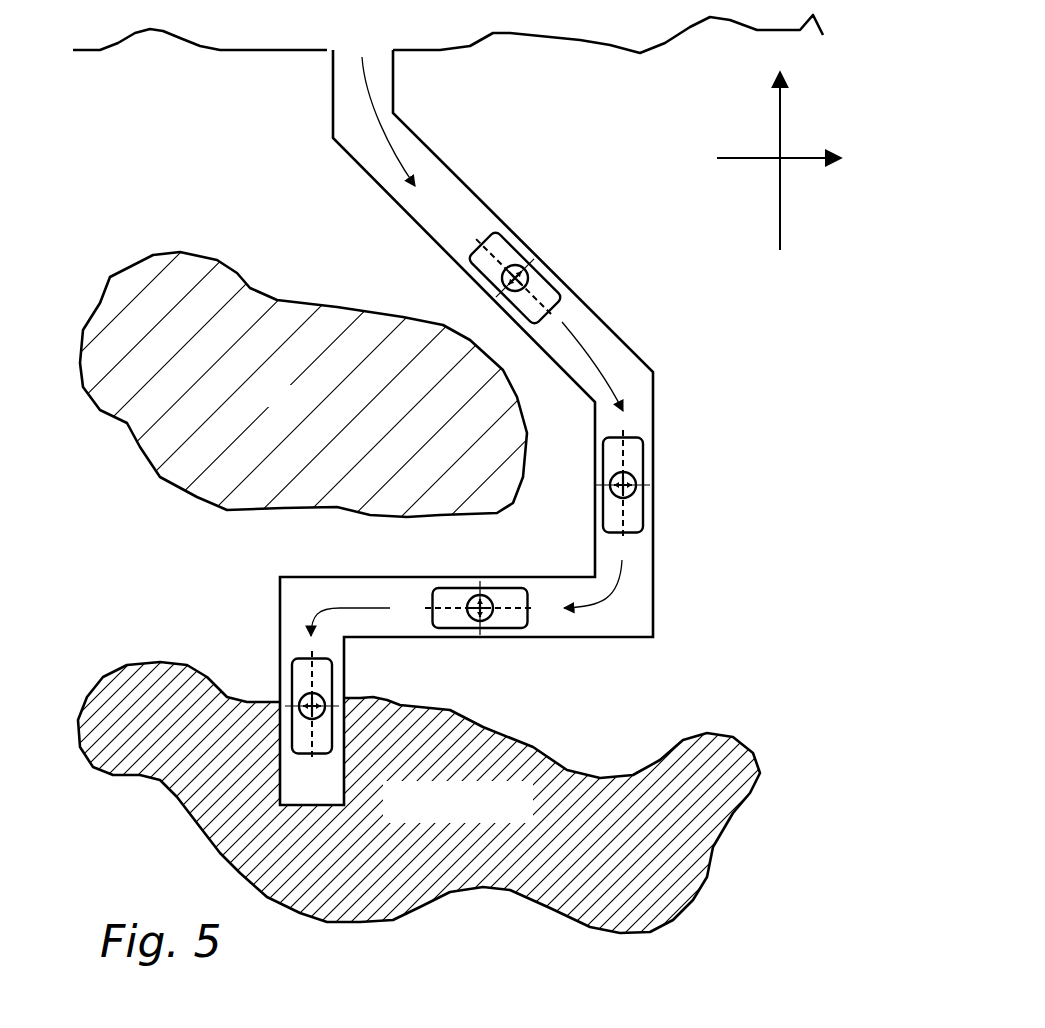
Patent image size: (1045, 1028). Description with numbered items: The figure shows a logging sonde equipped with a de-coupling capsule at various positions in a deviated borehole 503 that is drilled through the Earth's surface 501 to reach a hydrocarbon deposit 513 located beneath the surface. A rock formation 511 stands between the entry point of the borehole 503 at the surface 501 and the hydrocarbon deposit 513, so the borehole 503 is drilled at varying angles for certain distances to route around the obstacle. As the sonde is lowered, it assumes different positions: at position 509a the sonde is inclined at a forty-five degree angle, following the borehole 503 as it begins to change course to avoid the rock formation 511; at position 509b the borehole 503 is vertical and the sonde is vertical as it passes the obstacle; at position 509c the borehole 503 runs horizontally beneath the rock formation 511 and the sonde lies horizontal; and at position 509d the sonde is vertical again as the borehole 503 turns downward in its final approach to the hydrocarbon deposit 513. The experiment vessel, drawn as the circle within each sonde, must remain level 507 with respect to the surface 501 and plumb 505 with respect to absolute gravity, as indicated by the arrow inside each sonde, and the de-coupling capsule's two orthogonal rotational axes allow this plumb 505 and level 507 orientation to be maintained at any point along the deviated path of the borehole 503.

The Earth's surface 501 is at (165, 33).
The borehole 503 is at (393, 97).
The plumb 505 is at (780, 88).
The level 507 is at (793, 160).
The sonde position 509a is at (530, 257).
The sonde position 509b is at (645, 475).
The sonde position 509c is at (500, 588).
The sonde position 509d is at (293, 672).
The rock formation 511 is at (237, 273).
The hydrocarbon deposit 513 is at (530, 745).